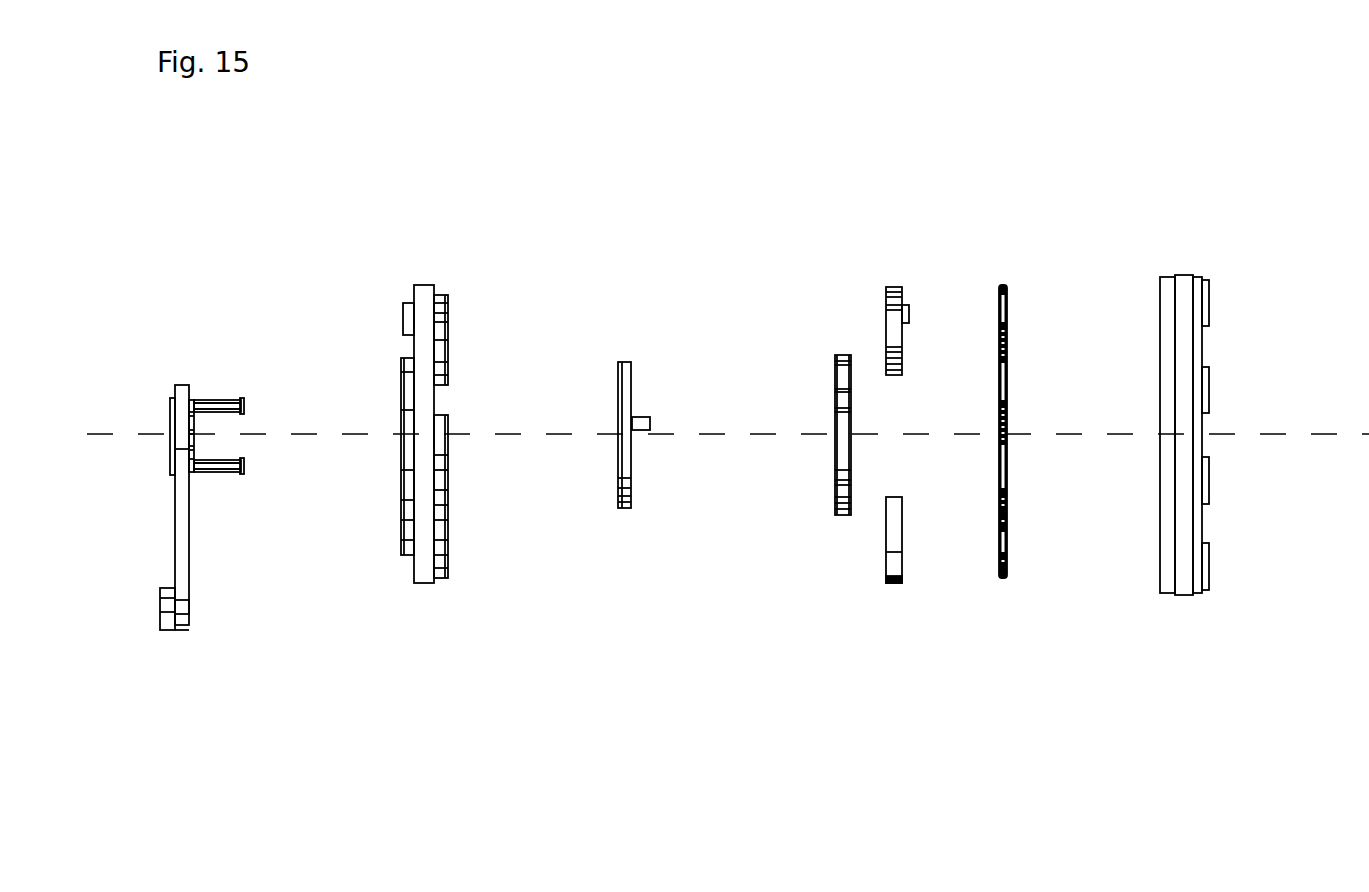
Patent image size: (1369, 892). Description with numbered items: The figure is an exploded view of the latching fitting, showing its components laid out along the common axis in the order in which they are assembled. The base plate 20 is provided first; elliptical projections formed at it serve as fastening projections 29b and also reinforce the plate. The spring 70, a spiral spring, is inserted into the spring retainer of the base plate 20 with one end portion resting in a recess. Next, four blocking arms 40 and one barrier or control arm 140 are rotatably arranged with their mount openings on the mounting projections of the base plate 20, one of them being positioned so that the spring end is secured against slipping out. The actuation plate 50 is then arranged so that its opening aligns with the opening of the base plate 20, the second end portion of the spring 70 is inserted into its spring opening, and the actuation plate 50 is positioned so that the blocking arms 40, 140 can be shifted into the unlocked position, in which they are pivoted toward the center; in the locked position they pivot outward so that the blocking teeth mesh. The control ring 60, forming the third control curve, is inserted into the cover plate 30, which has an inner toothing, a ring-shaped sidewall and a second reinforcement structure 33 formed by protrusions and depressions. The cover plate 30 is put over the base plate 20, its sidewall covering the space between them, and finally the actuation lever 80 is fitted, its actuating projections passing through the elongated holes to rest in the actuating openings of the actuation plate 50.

The actuation lever 80 is at (178, 340).
The base plate 20 is at (383, 338).
The fastening projections 29b is at (403, 316).
The spring 70 is at (614, 282).
The actuation plate 50 is at (812, 333).
The control arm 140 is at (888, 250).
The blocking arms 40 is at (886, 640).
The control ring 60 is at (998, 250).
The cover plate 30 is at (1242, 350).
The second reinforcement structure 33 is at (1280, 532).